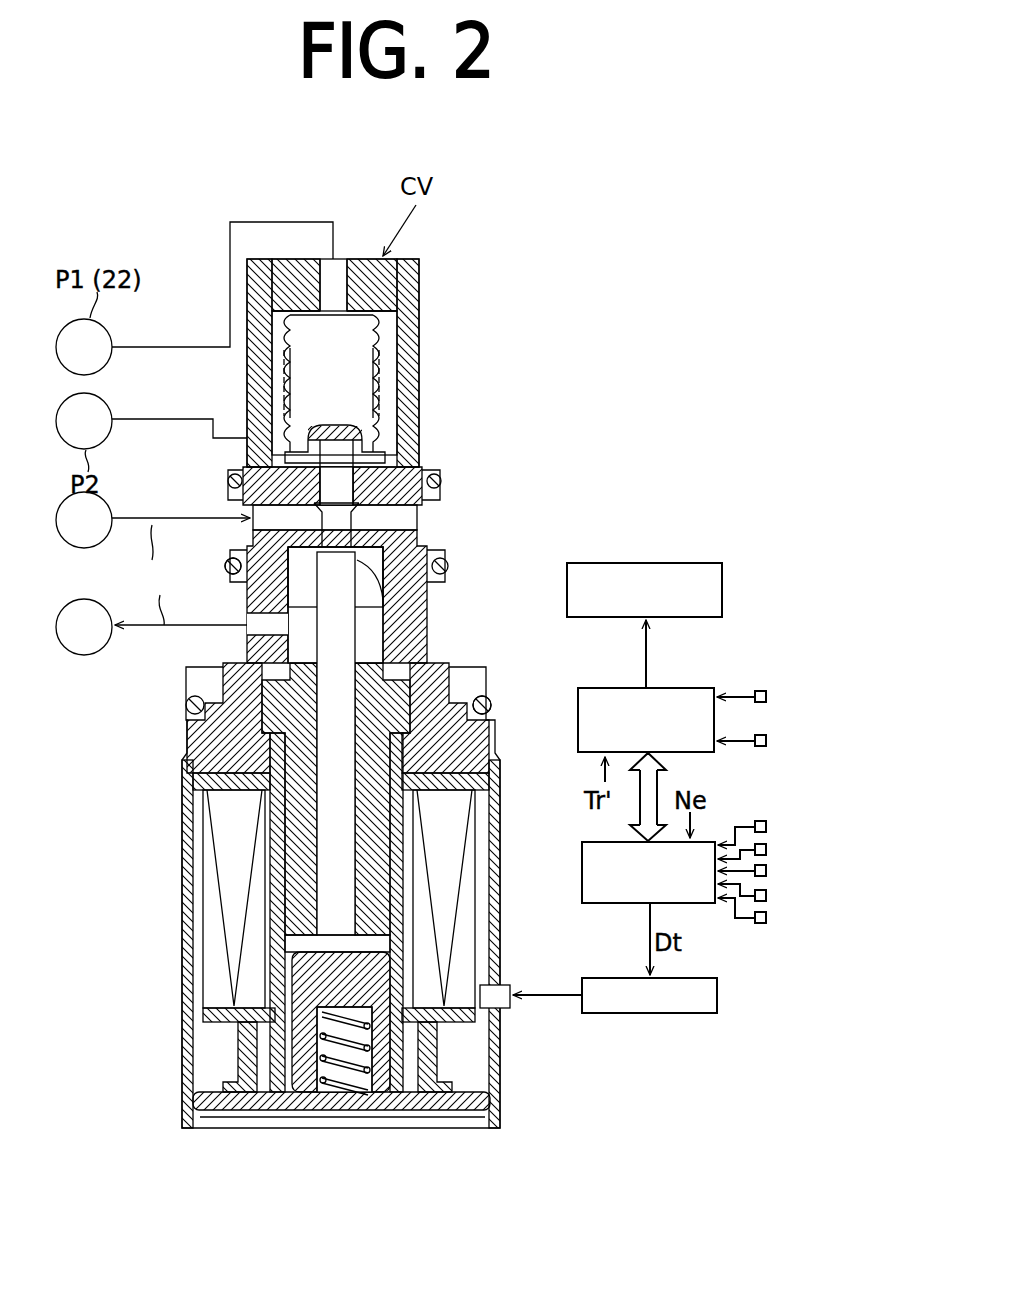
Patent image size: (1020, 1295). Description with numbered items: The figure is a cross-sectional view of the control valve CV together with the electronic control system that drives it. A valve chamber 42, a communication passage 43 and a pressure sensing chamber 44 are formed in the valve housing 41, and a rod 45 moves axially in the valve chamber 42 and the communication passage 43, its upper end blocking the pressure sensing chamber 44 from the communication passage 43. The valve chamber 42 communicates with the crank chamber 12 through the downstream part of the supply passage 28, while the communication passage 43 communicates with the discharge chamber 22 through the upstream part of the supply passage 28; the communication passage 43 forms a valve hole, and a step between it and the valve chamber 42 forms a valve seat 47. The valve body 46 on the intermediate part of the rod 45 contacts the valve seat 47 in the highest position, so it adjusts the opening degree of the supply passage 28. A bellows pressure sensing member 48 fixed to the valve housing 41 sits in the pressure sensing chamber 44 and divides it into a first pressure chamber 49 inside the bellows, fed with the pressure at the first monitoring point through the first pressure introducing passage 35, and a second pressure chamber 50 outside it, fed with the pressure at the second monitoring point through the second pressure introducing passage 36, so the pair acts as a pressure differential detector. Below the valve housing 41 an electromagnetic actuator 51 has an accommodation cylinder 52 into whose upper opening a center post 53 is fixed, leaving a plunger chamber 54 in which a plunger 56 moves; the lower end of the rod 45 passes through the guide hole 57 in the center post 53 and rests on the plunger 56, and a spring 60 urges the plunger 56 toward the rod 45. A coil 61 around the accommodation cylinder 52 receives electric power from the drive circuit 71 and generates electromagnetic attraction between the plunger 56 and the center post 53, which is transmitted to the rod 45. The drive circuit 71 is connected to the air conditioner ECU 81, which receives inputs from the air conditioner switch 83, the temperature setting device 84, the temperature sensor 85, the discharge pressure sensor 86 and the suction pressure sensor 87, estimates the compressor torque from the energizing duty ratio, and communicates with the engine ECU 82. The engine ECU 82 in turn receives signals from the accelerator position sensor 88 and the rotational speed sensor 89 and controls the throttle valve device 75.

The crank chamber 12 is at (70, 639).
The discharge chamber 22 is at (70, 532).
The supply passage 28 is at (156, 575).
The first pressure introducing passage 35 is at (142, 346).
The second pressure introducing passage 36 is at (137, 418).
The valve housing 41 is at (446, 548).
The valve chamber 42 is at (380, 604).
The communication passage 43 is at (352, 520).
The pressure sensing chamber 44 is at (397, 344).
The rod 45 is at (345, 652).
The valve body 46 is at (383, 606).
The valve seat 47 is at (227, 548).
The pressure sensing member 48 is at (419, 412).
The first pressure chamber 49 is at (347, 355).
The second pressure chamber 50 is at (262, 454).
The electromagnetic actuator 51 is at (503, 795).
The accommodation cylinder 52 is at (455, 745).
The center post 53 is at (420, 682).
The plunger chamber 54 is at (385, 940).
The plunger 56 is at (386, 970).
The guide hole 57 is at (325, 790).
The spring 60 is at (335, 1085).
The coil 61 is at (470, 848).
The drive circuit 71 is at (695, 1014).
The throttle valve device 75 is at (722, 596).
The air conditioner ECU 81 is at (603, 905).
The engine ECU 82 is at (600, 687).
The air conditioner switch 83 is at (760, 820).
The temperature setting device 84 is at (766, 850).
The temperature sensor 85 is at (766, 871).
The Pd sensor 86 is at (766, 896).
The Ps sensor 87 is at (760, 923).
The accelerator position sensor 88 is at (766, 697).
The rotational speed sensor 89 is at (766, 741).